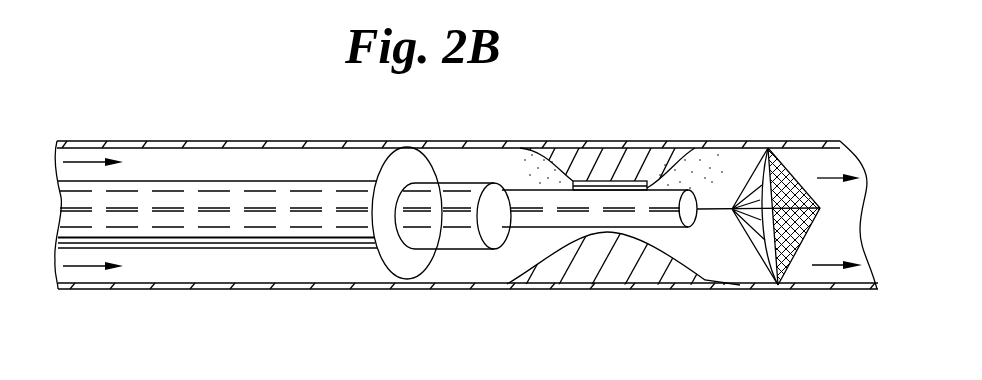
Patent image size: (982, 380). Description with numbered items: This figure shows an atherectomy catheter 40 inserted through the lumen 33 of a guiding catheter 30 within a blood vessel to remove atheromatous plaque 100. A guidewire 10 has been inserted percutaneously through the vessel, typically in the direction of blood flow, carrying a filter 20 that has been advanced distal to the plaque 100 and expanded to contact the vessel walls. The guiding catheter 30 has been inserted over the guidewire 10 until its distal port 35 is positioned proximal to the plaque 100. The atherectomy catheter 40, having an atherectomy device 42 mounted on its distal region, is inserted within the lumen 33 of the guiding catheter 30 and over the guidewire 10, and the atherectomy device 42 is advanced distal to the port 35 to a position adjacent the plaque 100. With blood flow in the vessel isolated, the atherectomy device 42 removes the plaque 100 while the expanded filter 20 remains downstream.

The guidewire 10 is at (192, 206).
The filter 20 is at (794, 158).
The guiding catheter 30 is at (217, 214).
The lumen 33 is at (238, 235).
The distal port 35 is at (497, 238).
The atherectomy catheter 40 is at (407, 170).
The atherectomy device 42 is at (596, 176).
The atheromatous plaque 100 is at (613, 153).